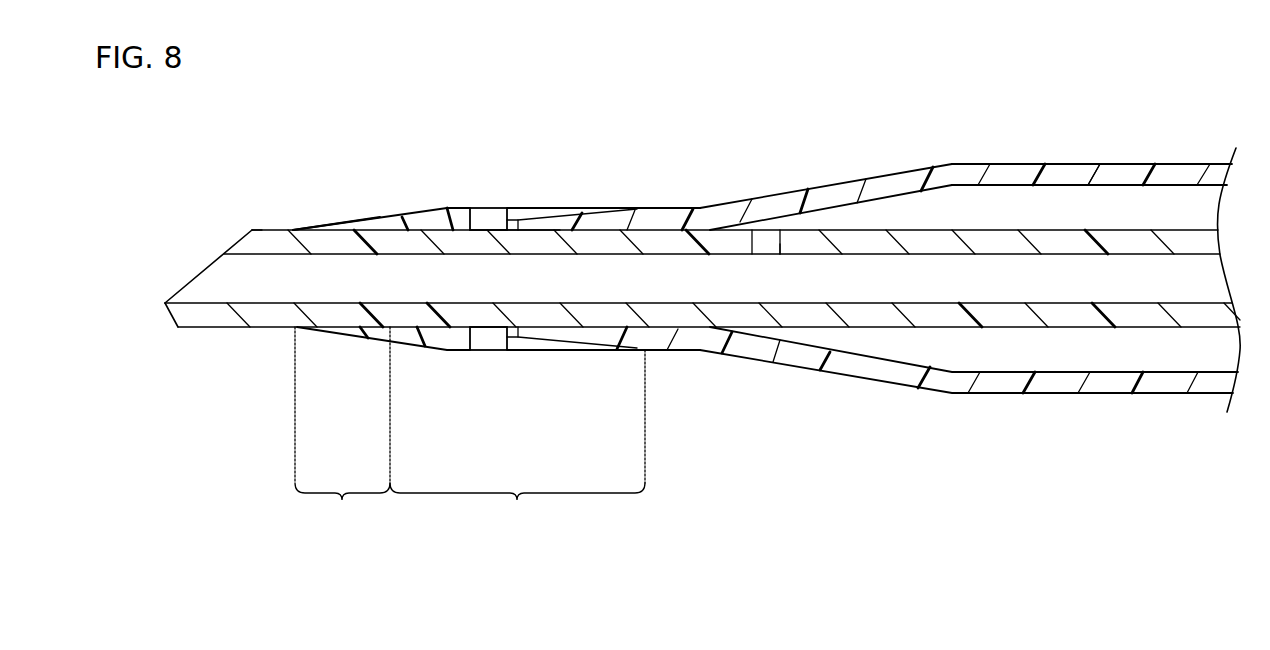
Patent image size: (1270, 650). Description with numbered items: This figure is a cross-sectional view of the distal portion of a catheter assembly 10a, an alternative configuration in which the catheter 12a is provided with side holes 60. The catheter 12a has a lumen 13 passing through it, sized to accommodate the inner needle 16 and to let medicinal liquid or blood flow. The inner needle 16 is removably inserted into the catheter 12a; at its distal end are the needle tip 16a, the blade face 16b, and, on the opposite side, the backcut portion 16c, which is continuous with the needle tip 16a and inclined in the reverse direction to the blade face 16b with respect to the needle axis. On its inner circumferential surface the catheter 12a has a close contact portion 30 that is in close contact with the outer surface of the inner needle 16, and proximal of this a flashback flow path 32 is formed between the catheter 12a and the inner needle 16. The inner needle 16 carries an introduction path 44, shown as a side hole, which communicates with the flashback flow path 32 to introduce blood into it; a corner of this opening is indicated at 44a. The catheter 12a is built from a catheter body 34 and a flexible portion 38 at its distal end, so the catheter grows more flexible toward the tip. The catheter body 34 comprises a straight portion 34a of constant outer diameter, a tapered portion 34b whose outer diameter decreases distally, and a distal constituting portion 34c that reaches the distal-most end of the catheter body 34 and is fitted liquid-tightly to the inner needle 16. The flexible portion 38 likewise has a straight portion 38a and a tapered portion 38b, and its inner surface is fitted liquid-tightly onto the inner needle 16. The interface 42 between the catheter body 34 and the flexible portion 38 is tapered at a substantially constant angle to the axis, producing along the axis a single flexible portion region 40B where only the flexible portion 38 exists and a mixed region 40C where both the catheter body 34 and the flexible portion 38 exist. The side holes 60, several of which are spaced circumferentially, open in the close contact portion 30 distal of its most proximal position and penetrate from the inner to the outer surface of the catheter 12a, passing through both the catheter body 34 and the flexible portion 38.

The catheter assembly 10a is at (612, 136).
The catheter 12a is at (1175, 157).
The lumen 13 is at (1106, 350).
The inner needle 16 is at (898, 333).
The needle tip 16a is at (165, 301).
The blade face 16b is at (248, 229).
The backcut portion 16c is at (170, 322).
The close contact portion 30 is at (533, 232).
The flashback flow path 32 is at (1055, 205).
The catheter body 34 is at (974, 158).
The straight portion 34a is at (1108, 176).
The tapered portion 34b is at (845, 190).
The distal constituting portion 34c is at (658, 213).
The flexible portion 38 is at (442, 204).
The straight portion 38a is at (570, 216).
The tapered portion 38b is at (373, 222).
The single flexible portion region 40B is at (342, 429).
The mixed region 40C is at (517, 441).
The interface 42 is at (515, 212).
The introduction path 44 is at (764, 238).
The fixing member corner 44a is at (777, 245).
The side hole 60 is at (488, 215).